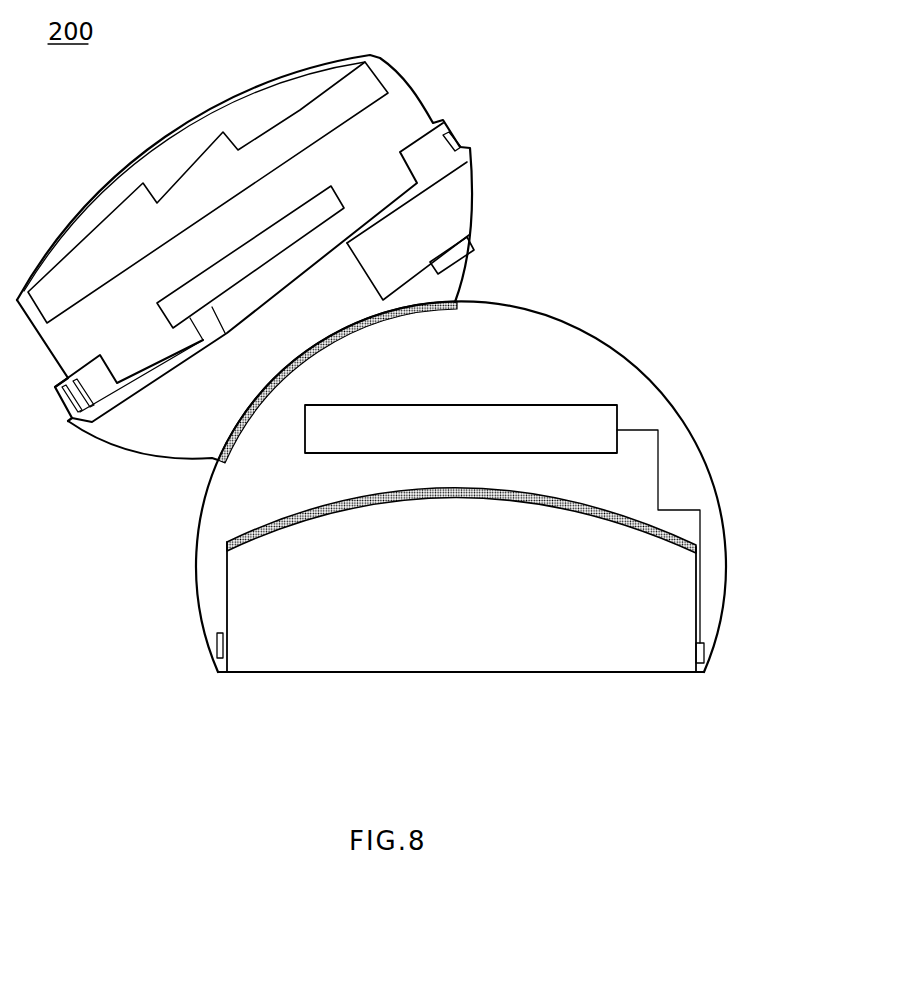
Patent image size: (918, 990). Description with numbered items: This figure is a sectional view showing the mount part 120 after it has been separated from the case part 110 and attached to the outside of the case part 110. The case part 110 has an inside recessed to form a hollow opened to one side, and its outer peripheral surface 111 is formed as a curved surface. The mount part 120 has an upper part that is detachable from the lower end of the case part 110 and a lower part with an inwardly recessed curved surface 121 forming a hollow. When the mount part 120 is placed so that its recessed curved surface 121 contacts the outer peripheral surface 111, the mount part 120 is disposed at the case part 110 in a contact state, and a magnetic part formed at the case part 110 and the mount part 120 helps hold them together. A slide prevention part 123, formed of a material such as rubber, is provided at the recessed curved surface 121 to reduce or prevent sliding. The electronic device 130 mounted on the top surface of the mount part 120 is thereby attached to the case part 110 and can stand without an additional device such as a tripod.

The case part 110 is at (501, 463).
The outer peripheral surface 111 is at (611, 346).
The mount part 120 is at (304, 278).
The recessed curved surface 121 is at (222, 428).
The slide prevention part 123 is at (466, 310).
The electronic device 130 is at (427, 90).